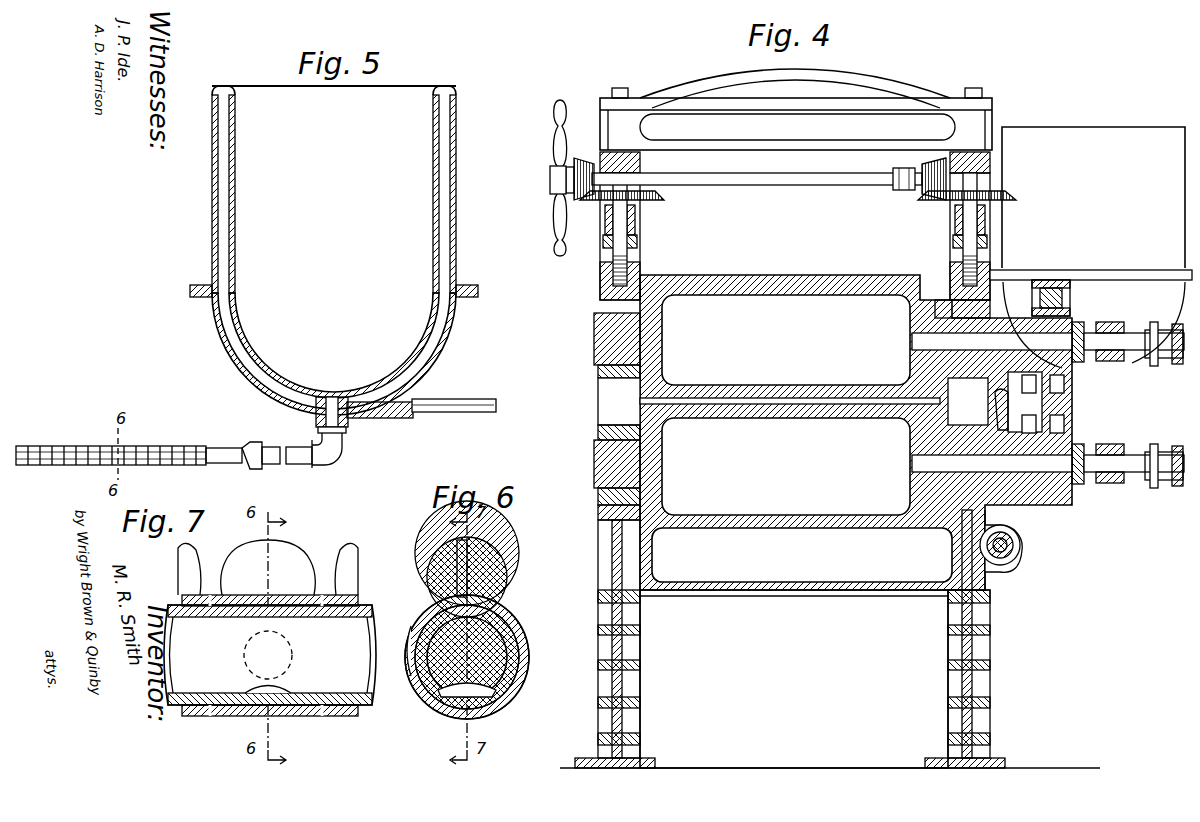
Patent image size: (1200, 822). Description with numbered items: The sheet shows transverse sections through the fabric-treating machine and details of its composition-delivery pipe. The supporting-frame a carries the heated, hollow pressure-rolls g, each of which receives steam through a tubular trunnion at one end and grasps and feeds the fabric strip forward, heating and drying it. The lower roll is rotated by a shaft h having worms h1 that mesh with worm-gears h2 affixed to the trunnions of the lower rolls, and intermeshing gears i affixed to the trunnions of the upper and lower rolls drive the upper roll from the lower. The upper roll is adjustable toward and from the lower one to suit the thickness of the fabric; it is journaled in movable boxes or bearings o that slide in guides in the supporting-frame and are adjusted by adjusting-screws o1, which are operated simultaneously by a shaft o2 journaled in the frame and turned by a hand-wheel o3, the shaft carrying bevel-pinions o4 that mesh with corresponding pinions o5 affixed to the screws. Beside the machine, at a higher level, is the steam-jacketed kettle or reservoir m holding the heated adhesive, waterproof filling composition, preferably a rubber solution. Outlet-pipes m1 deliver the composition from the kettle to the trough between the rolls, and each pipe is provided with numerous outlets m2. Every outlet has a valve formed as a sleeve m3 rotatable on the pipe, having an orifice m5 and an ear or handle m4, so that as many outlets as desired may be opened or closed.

In FIG. 4, the supporting-frame a is at (614, 548).
In FIG. 4, the rolls g is at (846, 296).
In FIG. 4, the shaft h is at (1022, 555).
In FIG. 4, the worms h1 is at (1022, 542).
In FIG. 4, the worm-gears h2 is at (1010, 390).
In FIG. 4, the intermeshing gears i is at (1068, 380).
In FIG. 5, the kettle or reservoir m is at (212, 255).
In FIG. 4, the kettle or reservoir m is at (1088, 140).
In FIG. 5, the outlet-pipes m1 is at (232, 458).
In FIG. 7, the outlet-pipes m1 is at (360, 632).
In FIG. 6, the outlet-pipes m1 is at (406, 602).
In FIG. 7, the outlets m2 is at (282, 692).
In FIG. 6, the outlets m2 is at (447, 702).
In FIG. 5, the sleeve m3 is at (152, 446).
In FIG. 7, the sleeve m3 is at (305, 716).
In FIG. 6, the sleeve m3 is at (508, 696).
In FIG. 7, the ear or handle m4 is at (290, 556).
In FIG. 6, the ear or handle m4 is at (468, 562).
In FIG. 7, the orifice m5 is at (290, 652).
In FIG. 6, the orifice m5 is at (406, 650).
In FIG. 4, the movable boxes or bearings o is at (600, 289).
In FIG. 4, the adjusting-screws o1 is at (628, 251).
In FIG. 4, the shaft o2 is at (806, 186).
In FIG. 4, the hand-wheel o3 is at (556, 182).
In FIG. 4, the bevel-pinions o4 is at (582, 160).
In FIG. 4, the pinions o5 is at (650, 198).